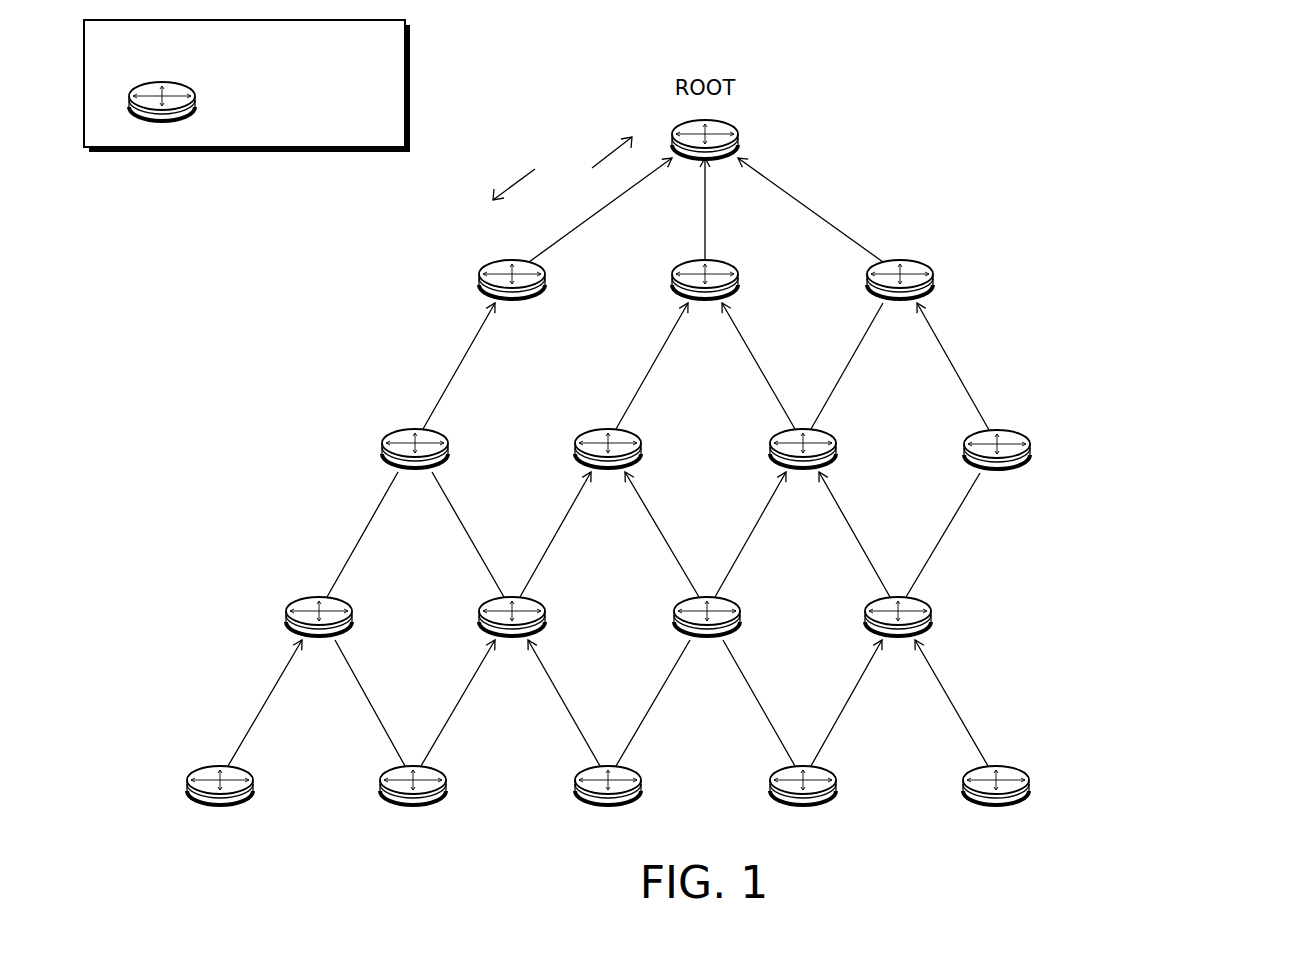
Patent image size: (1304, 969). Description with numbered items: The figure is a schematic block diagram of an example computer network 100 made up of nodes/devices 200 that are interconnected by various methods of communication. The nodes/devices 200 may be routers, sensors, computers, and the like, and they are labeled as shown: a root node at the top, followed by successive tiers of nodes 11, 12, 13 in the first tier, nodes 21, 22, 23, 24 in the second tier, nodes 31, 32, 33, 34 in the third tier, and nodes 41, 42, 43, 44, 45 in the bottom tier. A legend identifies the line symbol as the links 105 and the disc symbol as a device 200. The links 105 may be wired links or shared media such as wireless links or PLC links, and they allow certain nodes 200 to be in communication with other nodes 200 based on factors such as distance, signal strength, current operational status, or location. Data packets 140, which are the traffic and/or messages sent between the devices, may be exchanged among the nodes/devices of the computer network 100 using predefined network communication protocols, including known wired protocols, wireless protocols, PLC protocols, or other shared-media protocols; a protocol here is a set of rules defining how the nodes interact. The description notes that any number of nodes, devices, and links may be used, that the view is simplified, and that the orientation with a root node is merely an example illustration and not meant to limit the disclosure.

The computer network 100 is at (1218, 82).
The links 105 is at (120, 51).
The nodes/devices 200 is at (252, 101).
The data packets 140 is at (562, 168).
The node 11 is at (512, 301).
The node 12 is at (705, 301).
The node 13 is at (900, 301).
The node 21 is at (415, 469).
The node 22 is at (608, 469).
The node 23 is at (803, 469).
The node 24 is at (997, 470).
The node 31 is at (319, 638).
The node 32 is at (512, 638).
The node 33 is at (707, 638).
The node 34 is at (898, 638).
The node 41 is at (220, 806).
The node 42 is at (413, 806).
The node 43 is at (608, 806).
The node 44 is at (803, 806).
The node 45 is at (996, 806).